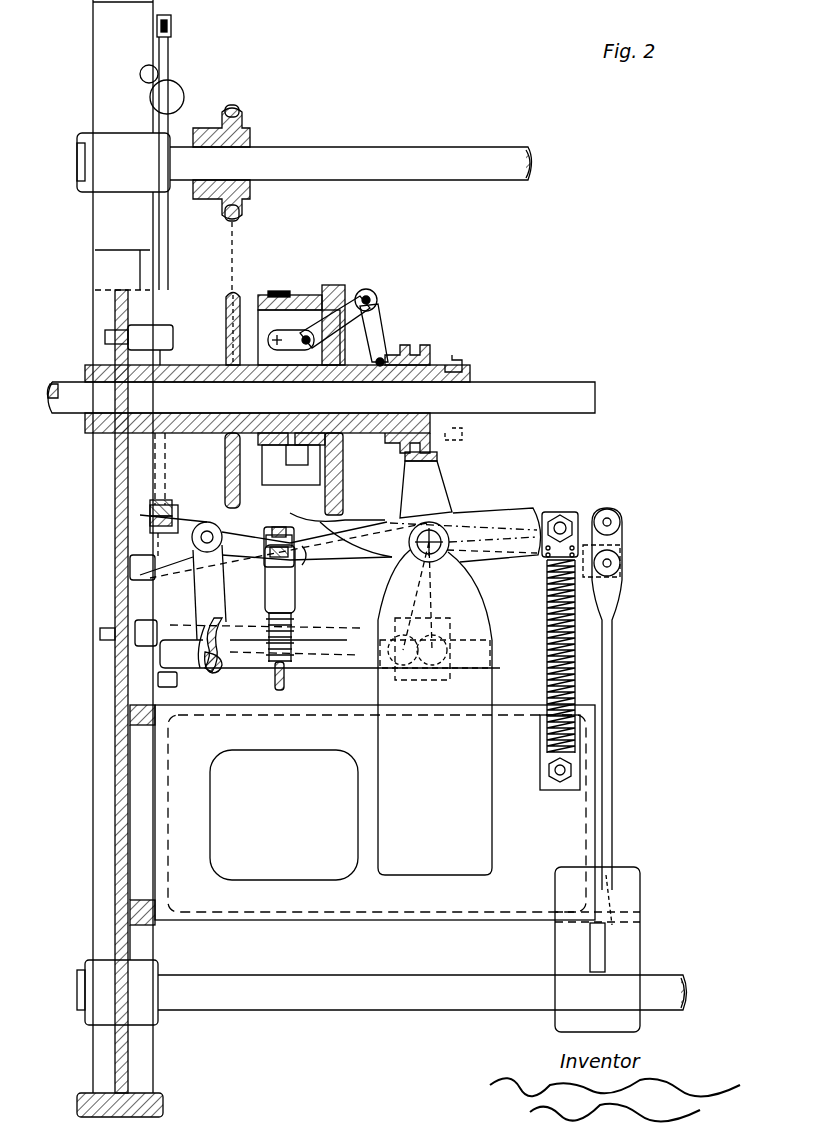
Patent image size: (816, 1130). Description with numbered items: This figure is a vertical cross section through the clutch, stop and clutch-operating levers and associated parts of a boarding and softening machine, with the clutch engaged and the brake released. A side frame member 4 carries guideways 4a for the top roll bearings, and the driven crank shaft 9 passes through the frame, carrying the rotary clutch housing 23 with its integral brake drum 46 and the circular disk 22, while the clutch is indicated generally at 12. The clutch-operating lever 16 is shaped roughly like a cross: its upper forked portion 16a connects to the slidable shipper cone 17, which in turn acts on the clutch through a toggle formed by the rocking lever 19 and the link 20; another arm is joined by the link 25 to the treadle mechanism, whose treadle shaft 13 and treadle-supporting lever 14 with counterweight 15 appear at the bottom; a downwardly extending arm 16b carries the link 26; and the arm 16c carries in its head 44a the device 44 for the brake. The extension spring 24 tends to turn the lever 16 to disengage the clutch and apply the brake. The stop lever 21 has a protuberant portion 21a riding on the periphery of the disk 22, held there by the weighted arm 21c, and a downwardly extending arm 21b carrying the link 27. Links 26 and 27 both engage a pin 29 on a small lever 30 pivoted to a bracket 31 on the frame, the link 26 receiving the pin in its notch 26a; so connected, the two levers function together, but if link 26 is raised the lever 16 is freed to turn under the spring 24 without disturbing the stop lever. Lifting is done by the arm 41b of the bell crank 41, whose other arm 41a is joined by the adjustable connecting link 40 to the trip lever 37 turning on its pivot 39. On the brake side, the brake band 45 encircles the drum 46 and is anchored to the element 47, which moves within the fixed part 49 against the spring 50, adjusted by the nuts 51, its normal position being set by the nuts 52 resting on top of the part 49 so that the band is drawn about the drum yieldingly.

The side frame member 4 is at (92, 745).
The guideway 4a is at (100, 62).
The crank shaft 9 is at (520, 382).
The clutch 12 is at (382, 298).
The treadle shaft 13 is at (302, 998).
The lever 14 is at (600, 940).
The counterweight 15 is at (635, 895).
The clutch-operating lever 16 is at (450, 515).
The upper forked portion 16a is at (428, 475).
The downwardly extending arm 16b is at (460, 625).
The arm 16c is at (310, 560).
The shipper cone 17 is at (430, 362).
The rocking lever 19 is at (345, 302).
The link 20 is at (393, 302).
The stop lever 21 is at (392, 545).
The protuberant portion 21a is at (340, 535).
The downwardly extending arm 21b is at (420, 600).
The weighted arm 21c is at (546, 512).
The circular disk 22 is at (340, 285).
The rotary clutch housing 23 is at (325, 290).
The extension spring 24 is at (546, 652).
The link 25 is at (614, 702).
The link 26 is at (325, 668).
The notch 26a is at (192, 640).
The link 27 is at (355, 668).
The pin 29 is at (205, 675).
The small lever 30 is at (222, 605).
The bracket 31 is at (140, 532).
The trip lever 37 is at (168, 226).
The pivot 39 is at (148, 330).
The connecting link 40 is at (166, 505).
The bell crank 41 is at (142, 632).
The arm 41a is at (135, 572).
The arm 41b is at (160, 680).
The link, toggle or like device 44 is at (268, 566).
The head 44a is at (270, 555).
The brake band 45 is at (280, 294).
The brake drum 46 is at (234, 294).
The element 47 is at (279, 528).
The fixed part 49 is at (295, 598).
The spring 50 is at (294, 648).
The nuts 51 is at (283, 672).
The nuts 52 is at (270, 560).